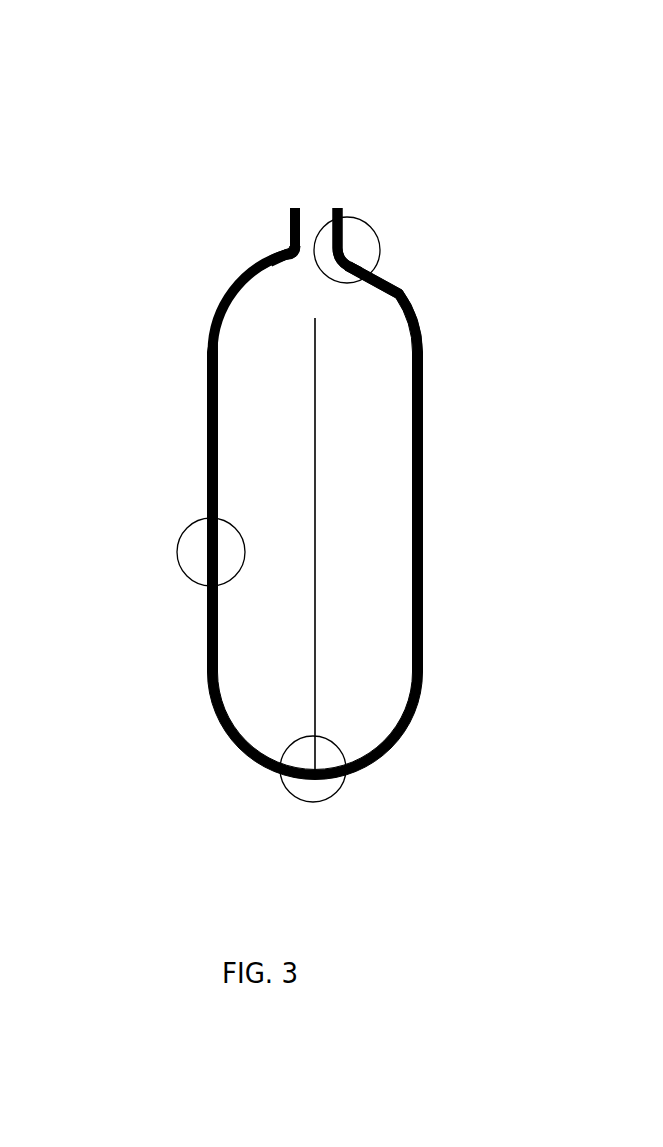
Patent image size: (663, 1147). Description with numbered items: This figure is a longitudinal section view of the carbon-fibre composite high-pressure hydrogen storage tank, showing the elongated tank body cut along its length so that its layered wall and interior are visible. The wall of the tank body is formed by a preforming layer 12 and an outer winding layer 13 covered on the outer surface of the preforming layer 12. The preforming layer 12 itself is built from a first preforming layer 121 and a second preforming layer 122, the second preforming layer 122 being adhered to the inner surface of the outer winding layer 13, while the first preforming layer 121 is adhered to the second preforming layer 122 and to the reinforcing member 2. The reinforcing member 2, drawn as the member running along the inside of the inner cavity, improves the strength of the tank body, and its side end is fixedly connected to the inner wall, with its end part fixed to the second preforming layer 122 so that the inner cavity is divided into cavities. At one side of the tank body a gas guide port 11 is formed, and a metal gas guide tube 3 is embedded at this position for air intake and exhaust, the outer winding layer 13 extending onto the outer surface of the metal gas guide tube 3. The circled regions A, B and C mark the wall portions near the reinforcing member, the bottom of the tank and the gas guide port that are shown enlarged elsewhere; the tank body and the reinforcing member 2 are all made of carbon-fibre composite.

The preforming layer 12 is at (216, 313).
The first preforming layer 121 is at (243, 273).
The second preforming layer 122 is at (223, 300).
The outer winding layer 13 is at (290, 210).
The metal gas guide tube 3 is at (290, 247).
The gas guide port 11 is at (307, 220).
The reinforcing member 2 is at (320, 317).
The detail region A is at (177, 567).
The detail region B is at (312, 803).
The detail region C is at (370, 222).